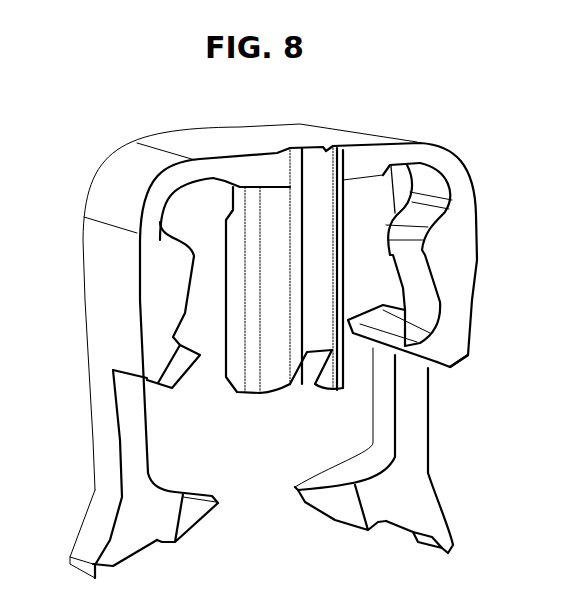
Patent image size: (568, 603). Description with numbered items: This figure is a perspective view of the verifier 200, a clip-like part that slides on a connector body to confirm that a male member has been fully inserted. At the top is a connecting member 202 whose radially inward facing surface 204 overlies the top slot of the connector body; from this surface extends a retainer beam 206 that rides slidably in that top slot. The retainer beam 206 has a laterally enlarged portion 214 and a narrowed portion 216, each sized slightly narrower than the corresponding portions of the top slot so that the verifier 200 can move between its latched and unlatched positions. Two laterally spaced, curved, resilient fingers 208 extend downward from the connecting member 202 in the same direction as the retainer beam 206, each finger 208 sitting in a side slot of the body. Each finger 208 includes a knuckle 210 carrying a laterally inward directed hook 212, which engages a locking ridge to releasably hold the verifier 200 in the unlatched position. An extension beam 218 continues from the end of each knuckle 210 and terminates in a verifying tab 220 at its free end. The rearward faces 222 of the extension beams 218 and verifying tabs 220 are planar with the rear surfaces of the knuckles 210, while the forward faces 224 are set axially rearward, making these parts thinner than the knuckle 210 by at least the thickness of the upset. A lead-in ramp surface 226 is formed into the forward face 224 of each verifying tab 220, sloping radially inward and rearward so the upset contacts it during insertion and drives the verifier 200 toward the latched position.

The verifier 200 is at (465, 144).
The connecting member 202 is at (223, 142).
The radially inward facing surface 204 is at (201, 185).
The retainer beam 206 is at (272, 196).
The finger 208 is at (128, 290).
The knuckle 210 is at (197, 385).
The hook 212 is at (163, 363).
The laterally enlarged portion 214 is at (245, 272).
The narrowed portion 216 is at (325, 255).
The extension beam 218 is at (418, 460).
The verifying tab 220 is at (395, 508).
The rearward face 222 is at (92, 443).
The forward face 224 is at (455, 325).
The lead-in ramp surface 226 is at (188, 517).